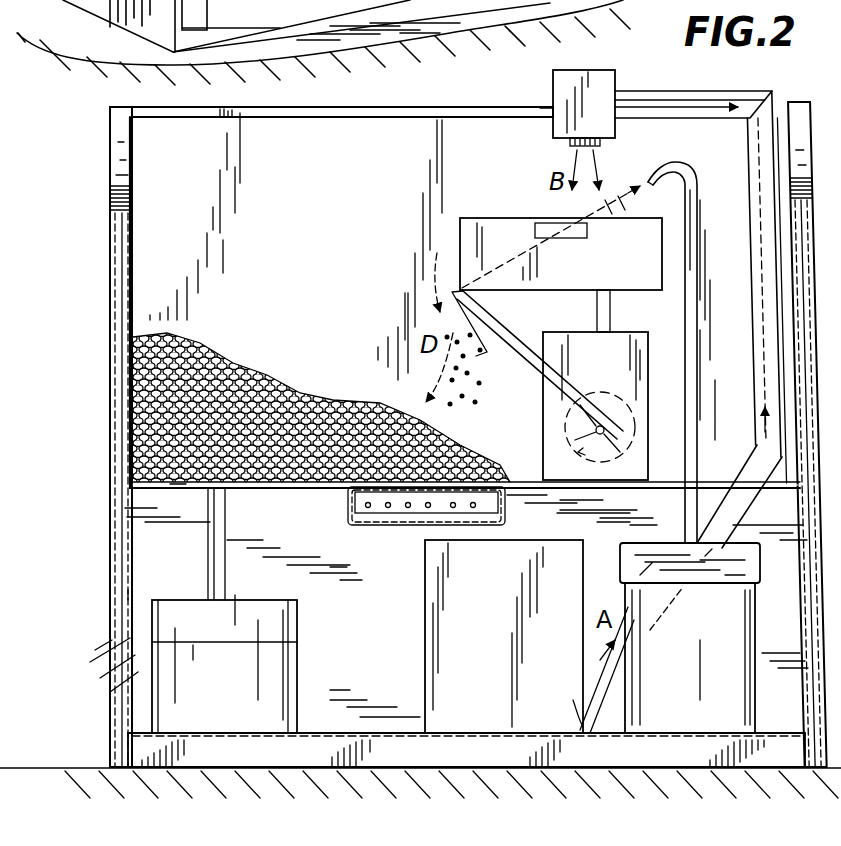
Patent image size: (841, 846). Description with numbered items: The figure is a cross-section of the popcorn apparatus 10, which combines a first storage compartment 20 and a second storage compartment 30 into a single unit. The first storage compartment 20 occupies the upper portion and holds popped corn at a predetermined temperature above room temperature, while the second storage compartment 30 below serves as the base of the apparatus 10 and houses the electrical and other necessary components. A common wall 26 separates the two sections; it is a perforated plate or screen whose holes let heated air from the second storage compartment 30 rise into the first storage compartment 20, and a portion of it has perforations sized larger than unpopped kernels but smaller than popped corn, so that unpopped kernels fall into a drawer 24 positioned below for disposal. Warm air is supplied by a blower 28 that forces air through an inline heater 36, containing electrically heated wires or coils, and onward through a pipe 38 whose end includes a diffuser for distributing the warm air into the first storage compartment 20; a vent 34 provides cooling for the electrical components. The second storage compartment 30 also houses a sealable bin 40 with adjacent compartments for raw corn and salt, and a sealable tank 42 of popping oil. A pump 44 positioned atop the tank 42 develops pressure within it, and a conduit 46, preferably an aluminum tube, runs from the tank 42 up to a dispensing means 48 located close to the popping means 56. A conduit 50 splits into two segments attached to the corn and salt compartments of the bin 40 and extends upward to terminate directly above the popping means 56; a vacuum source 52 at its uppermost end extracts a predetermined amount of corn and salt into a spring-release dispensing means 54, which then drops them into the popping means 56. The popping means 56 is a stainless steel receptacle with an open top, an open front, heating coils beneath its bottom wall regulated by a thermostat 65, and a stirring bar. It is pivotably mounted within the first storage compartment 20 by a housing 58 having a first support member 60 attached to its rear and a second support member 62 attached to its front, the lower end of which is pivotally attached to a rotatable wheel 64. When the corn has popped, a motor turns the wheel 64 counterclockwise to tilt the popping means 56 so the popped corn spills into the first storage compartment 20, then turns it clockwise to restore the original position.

The apparatus 10 is at (93, 170).
The first storage compartment 20 is at (157, 290).
The drawer 24 is at (367, 527).
The common wall 26 is at (177, 489).
The blower 28 is at (150, 715).
The second storage compartment 30 is at (147, 594).
The vent 34 is at (138, 631).
The inline heater 36 is at (298, 622).
The pipe 38 is at (227, 521).
The bin 40 is at (427, 672).
The tank 42 is at (757, 640).
The pump 44 is at (745, 570).
The conduit 46 is at (633, 418).
The dispensing means 48 is at (647, 181).
The conduit 50 is at (670, 92).
The vacuum source 52 is at (604, 72).
The dispensing means 54 is at (573, 143).
The popping means 56 is at (460, 226).
The housing 58 is at (630, 333).
The first support member 60 is at (610, 310).
The second support member 62 is at (505, 308).
The rotatable wheel 64 is at (636, 432).
The thermostat 65 is at (547, 222).